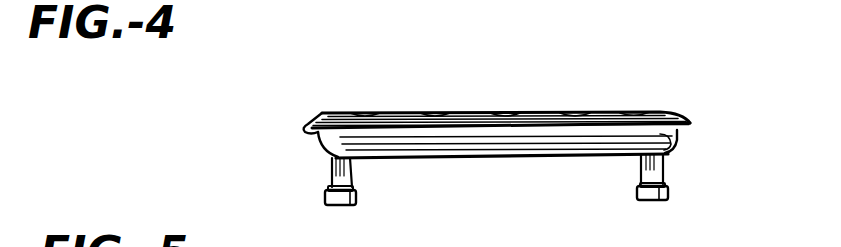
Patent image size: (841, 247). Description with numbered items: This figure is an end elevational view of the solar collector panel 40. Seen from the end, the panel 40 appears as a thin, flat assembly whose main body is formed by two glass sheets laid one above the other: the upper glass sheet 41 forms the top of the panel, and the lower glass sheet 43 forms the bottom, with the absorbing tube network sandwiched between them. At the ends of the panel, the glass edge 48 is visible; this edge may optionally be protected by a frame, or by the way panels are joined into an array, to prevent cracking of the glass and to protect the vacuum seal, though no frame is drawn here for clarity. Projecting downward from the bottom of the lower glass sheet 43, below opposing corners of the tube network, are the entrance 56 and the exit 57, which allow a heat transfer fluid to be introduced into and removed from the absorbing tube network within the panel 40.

The panel 40 is at (247, 120).
The upper glass sheet 41 is at (653, 106).
The lower glass sheet 43 is at (483, 162).
The glass edge 48 is at (305, 127).
The entrance 56 is at (358, 180).
The exit 57 is at (665, 167).